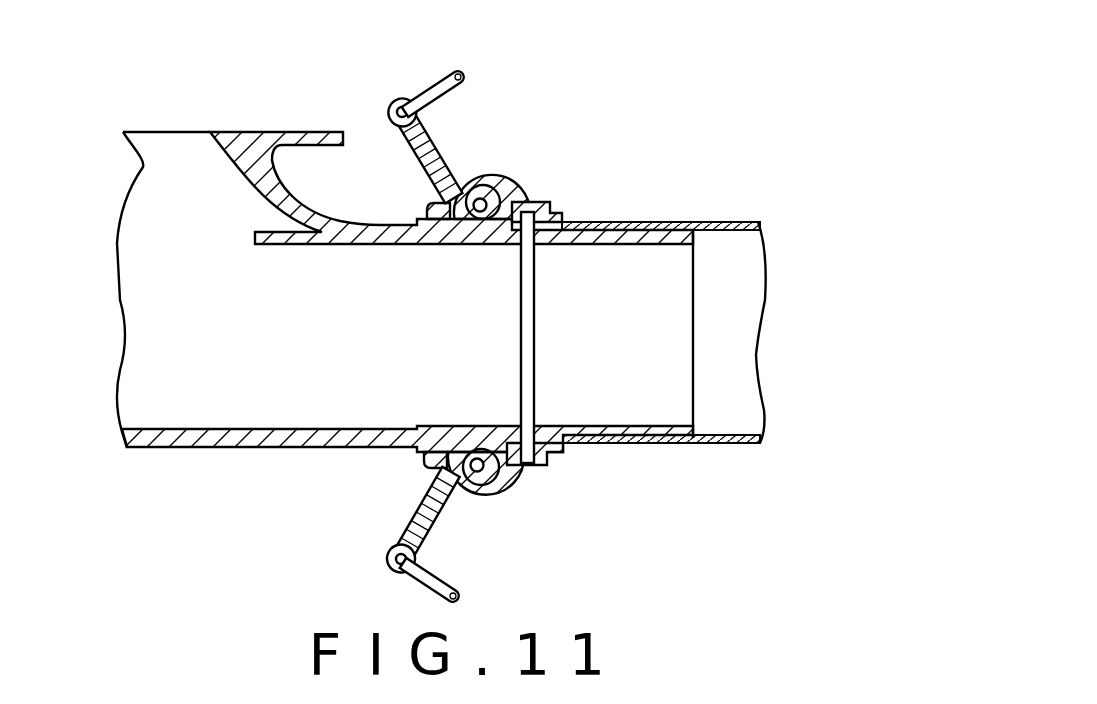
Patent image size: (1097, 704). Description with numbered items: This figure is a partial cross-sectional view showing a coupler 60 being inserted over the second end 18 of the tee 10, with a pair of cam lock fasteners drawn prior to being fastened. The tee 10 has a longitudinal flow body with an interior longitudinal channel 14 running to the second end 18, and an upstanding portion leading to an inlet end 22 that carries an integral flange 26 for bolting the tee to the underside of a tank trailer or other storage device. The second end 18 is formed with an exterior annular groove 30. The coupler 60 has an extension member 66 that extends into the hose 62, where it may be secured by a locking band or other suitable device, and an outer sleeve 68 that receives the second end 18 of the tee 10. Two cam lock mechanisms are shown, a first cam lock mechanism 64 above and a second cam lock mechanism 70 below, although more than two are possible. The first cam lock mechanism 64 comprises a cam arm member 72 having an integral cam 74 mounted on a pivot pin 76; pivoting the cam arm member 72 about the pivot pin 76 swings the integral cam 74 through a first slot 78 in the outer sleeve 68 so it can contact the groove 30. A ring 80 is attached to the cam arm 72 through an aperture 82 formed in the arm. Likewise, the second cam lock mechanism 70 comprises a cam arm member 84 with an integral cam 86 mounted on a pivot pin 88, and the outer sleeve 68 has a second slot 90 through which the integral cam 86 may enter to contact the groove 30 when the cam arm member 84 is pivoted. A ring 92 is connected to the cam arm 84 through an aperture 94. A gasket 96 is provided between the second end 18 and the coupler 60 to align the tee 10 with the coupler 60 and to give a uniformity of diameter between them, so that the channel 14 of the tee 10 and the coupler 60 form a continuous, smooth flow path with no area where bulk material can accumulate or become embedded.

The tee 10 is at (173, 108).
The interior longitudinal channel 14 is at (207, 335).
The second end 18 is at (507, 246).
The inlet end 22 is at (163, 158).
The integral flange 26 is at (293, 130).
The exterior annular groove 30 is at (470, 240).
The coupler 60 is at (542, 124).
The hose 62 is at (730, 222).
The first cam lock mechanism 64 is at (486, 102).
The extension member 66 is at (634, 225).
The outer sleeve 68 is at (548, 205).
The second cam lock mechanism 70 is at (500, 530).
The cam arm member 72 is at (409, 163).
The integral cam 74 is at (490, 190).
The pivot pin 76 is at (457, 185).
The first slot 78 is at (518, 196).
The ring 80 is at (445, 80).
The aperture 82 is at (397, 104).
The cam arm member 84 is at (418, 508).
The integral cam 86 is at (498, 492).
The pivot pin 88 is at (466, 488).
The second slot 90 is at (446, 452).
The ring 92 is at (433, 587).
The aperture 94 is at (390, 552).
The gasket 96 is at (535, 245).